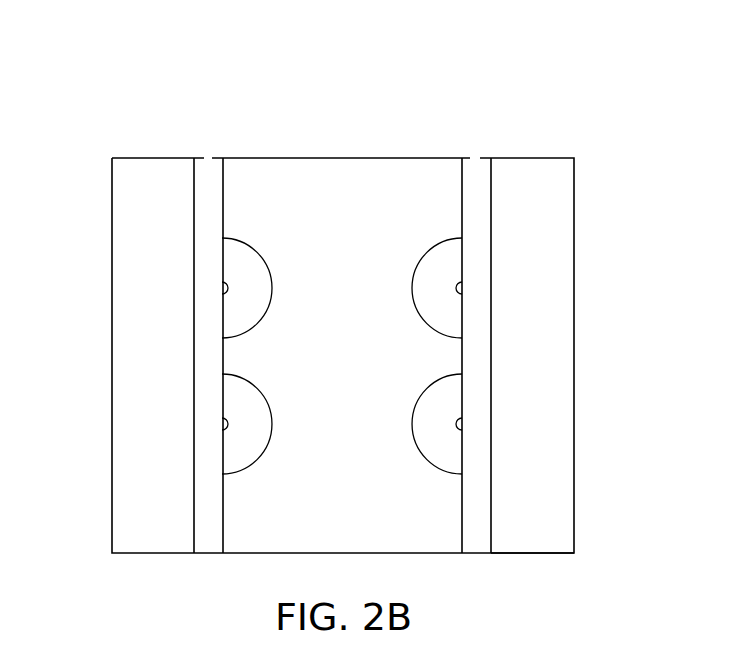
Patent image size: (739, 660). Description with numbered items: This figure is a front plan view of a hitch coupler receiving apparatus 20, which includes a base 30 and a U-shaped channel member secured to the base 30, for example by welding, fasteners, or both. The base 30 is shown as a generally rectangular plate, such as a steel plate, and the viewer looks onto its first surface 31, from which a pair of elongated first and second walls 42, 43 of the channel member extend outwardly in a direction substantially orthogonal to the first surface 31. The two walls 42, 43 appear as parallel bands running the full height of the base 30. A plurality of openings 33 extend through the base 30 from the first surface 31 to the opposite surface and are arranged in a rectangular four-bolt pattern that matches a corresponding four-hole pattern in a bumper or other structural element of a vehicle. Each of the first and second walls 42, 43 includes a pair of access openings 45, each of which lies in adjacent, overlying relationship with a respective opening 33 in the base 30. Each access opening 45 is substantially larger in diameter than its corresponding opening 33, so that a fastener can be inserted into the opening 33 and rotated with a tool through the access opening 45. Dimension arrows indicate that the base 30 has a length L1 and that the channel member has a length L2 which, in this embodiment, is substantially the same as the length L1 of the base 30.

The hitch coupler receiving apparatus 20 is at (529, 71).
The base 30 is at (561, 156).
The first surface 31 is at (548, 341).
The openings 33 is at (228, 288).
The first wall 42 is at (207, 170).
The second wall 43 is at (476, 170).
The access openings 45 is at (266, 262).
The length of the base L1 is at (57, 158).
The length of the channel member L2 is at (155, 158).